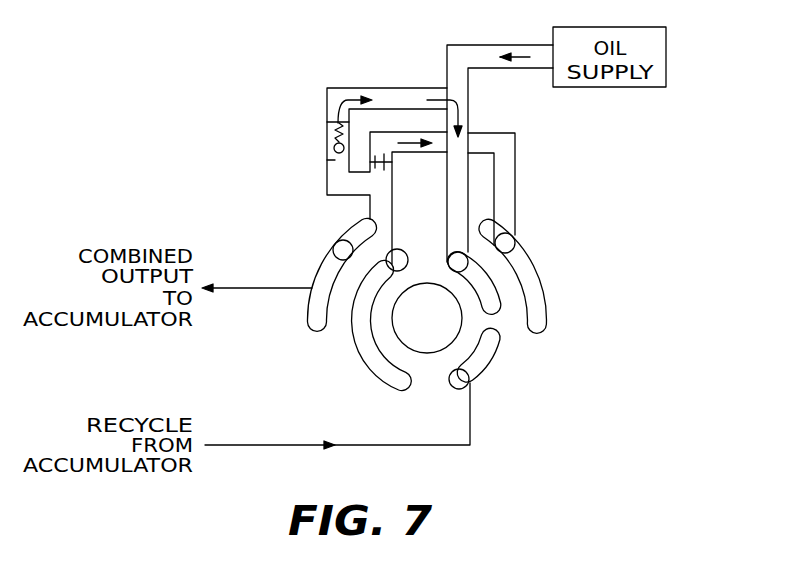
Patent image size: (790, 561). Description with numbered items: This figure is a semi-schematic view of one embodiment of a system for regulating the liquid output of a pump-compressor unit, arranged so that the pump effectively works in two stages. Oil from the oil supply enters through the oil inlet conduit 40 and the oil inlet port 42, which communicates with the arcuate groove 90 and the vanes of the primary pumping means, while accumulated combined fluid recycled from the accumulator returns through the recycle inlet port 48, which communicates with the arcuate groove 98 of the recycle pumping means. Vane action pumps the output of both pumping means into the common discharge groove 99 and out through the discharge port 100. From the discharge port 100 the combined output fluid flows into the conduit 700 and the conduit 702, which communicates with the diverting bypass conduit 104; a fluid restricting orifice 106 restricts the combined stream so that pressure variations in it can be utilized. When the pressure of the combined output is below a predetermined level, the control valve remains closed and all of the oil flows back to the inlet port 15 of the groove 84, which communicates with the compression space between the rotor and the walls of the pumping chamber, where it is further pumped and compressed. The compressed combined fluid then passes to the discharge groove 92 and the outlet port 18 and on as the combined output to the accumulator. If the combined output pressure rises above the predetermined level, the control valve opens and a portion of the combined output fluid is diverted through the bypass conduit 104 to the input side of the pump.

The oil inlet conduit 40 is at (468, 97).
The diverting bypass conduit 104 is at (382, 88).
The conduit 702 is at (332, 181).
The fluid restricting orifice 106 is at (381, 176).
The conduit 700 is at (430, 153).
The discharge port 100 is at (400, 272).
The common discharge groove 99 is at (395, 387).
The arcuate groove 90 is at (499, 299).
The arcuate groove 98 is at (499, 349).
The oil inlet port 42 is at (447, 265).
The air outlet port 18 is at (333, 247).
The groove 92 is at (310, 322).
The air inlet port 15 is at (512, 242).
The groove 84 is at (540, 320).
The recycle inlet port 48 is at (468, 385).